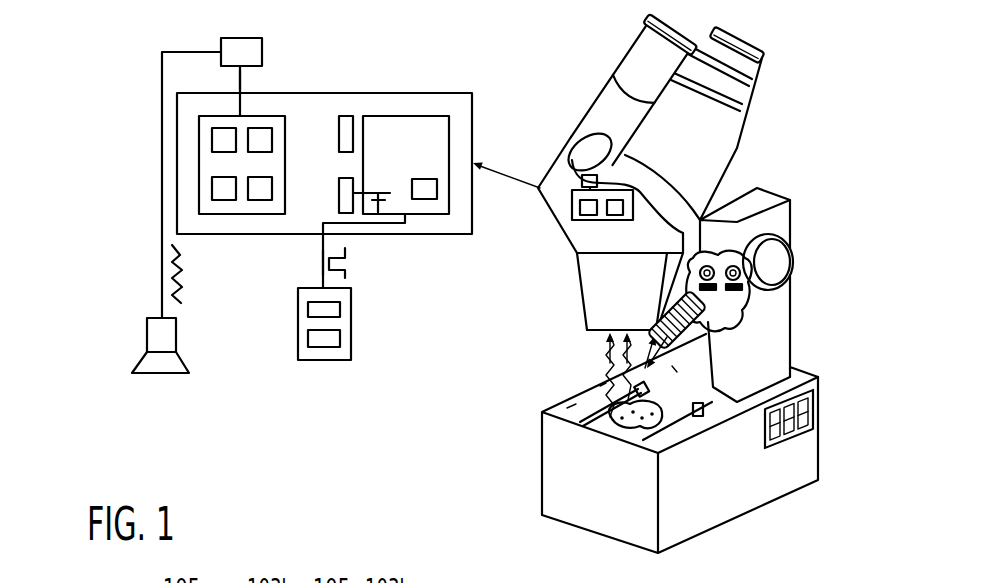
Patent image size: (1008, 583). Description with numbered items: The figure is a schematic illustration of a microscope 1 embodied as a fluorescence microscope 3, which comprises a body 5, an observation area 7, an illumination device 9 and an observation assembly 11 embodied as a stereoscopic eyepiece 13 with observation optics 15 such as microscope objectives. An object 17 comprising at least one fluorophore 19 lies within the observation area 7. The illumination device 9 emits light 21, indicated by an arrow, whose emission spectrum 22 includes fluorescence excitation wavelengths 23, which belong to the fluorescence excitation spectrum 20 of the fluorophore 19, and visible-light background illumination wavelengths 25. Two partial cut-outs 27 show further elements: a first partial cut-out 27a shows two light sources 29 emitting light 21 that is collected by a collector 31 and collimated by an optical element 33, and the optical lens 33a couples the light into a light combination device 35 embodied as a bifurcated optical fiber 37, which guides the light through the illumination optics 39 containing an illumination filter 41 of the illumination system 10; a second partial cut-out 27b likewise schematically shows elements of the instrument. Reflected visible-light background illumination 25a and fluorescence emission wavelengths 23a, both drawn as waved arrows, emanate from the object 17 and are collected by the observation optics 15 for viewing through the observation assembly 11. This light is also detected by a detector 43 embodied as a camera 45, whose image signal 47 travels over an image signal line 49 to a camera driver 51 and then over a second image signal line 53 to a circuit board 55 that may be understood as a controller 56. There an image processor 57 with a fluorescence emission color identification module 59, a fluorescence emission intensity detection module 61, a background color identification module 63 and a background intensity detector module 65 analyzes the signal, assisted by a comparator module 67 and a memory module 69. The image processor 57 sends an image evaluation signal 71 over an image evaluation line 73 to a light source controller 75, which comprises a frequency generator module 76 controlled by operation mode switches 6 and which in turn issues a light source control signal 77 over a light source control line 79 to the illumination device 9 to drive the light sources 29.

The microscope 1 is at (676, 295).
The fluorescence microscope 3 is at (815, 92).
The body 5 is at (800, 451).
The operation mode switches 6 is at (826, 404).
The observation area 7 is at (600, 386).
The illumination device 9 is at (303, 360).
The illumination system 10 is at (689, 354).
The observation assembly 11 is at (712, 117).
The stereoscopic eyepiece 13 is at (746, 100).
The observation optics 15 is at (586, 337).
The object 17 is at (630, 427).
The fluorophore 19 is at (541, 448).
The fluorescence excitation spectrum 20 is at (632, 430).
The light 21 is at (771, 473).
The emission spectrum 22 is at (771, 473).
The fluorescence excitation wavelengths 23 is at (771, 473).
The fluorescence emission wavelengths 23a is at (558, 409).
The visible-light background illumination wavelengths 25 is at (697, 400).
The reflected visible-light background illumination 25a is at (677, 372).
The partial cut-outs 27 is at (688, 179).
The first partial cut-out 27a is at (760, 190).
The second partial cut-out 27b is at (570, 136).
The light sources 29 is at (308, 310).
The collector 31 is at (697, 266).
The optical element 33 is at (697, 291).
The optical lens 33a is at (690, 302).
The light combination device 35 is at (777, 329).
The bifurcated optical fiber 37 is at (702, 338).
The illumination optics 39 is at (603, 355).
The illumination filter 41 is at (612, 380).
The detector 43 is at (118, 345).
The camera 45 is at (147, 340).
The image signal 47 is at (182, 298).
The image signal line 49 is at (183, 51).
The camera driver 51 is at (240, 38).
The second image signal line 53 is at (241, 80).
The circuit board 55 is at (358, 136).
The controller 56 is at (440, 93).
The image processor 57 is at (202, 118).
The fluorescence emission color identification module 59 is at (248, 153).
The fluorescence emission intensity detection module 61 is at (212, 135).
The background color identification module 63 is at (248, 200).
The background intensity detector module 65 is at (212, 183).
The comparator module 67 is at (339, 135).
The memory module 69 is at (339, 195).
The image evaluation signal 71 is at (380, 213).
The image evaluation line 73 is at (380, 186).
The light source controller 75 is at (394, 116).
The frequency generator module 76 is at (437, 190).
The light source control signal 77 is at (345, 271).
The light source control line 79 is at (323, 262).